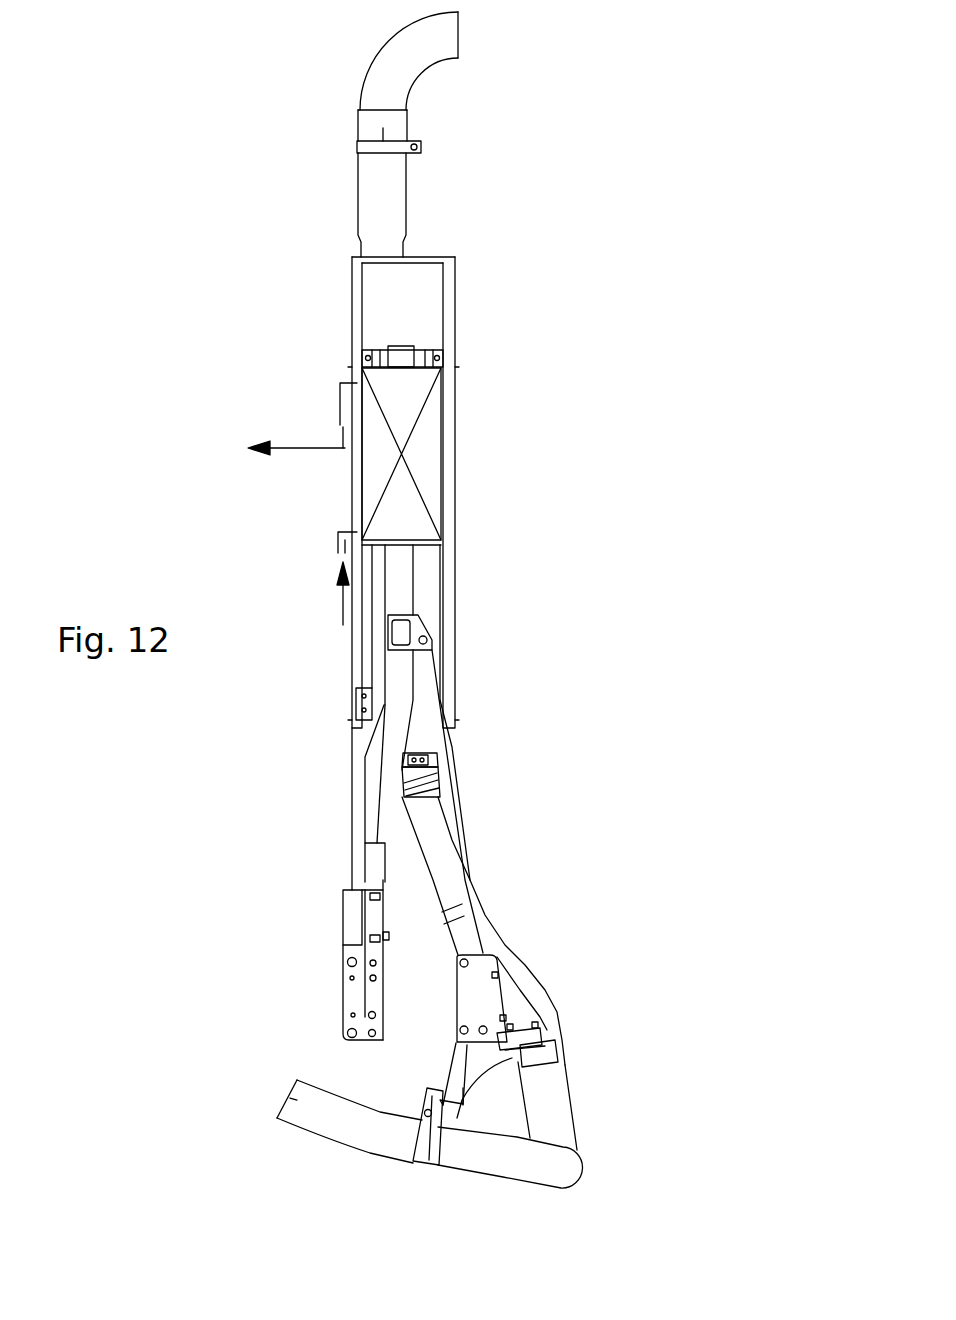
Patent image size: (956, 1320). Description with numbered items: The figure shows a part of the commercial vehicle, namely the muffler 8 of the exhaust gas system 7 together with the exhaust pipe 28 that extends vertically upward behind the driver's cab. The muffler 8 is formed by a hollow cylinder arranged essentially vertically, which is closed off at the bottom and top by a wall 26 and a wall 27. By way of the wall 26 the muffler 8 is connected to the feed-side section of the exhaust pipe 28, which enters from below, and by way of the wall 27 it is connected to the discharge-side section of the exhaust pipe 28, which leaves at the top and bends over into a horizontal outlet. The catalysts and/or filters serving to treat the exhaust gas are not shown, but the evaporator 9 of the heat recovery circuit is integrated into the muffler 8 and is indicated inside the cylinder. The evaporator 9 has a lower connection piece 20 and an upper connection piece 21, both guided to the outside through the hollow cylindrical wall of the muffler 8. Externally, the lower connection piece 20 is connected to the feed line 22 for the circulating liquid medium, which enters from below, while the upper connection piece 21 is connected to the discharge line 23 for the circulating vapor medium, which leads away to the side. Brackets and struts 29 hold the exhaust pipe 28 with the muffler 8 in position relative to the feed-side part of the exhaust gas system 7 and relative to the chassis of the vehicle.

The exhaust gas system 7 is at (325, 1125).
The muffler 8 is at (472, 590).
The evaporator 9 is at (434, 450).
The lower connection piece 20 is at (343, 530).
The upper connection piece 21 is at (343, 400).
The feed line 22 is at (343, 598).
The discharge line 23 is at (309, 447).
The wall 26 is at (413, 725).
The wall 27 is at (421, 255).
The exhaust pipe 28 is at (528, 944).
The brackets and struts 29 is at (463, 992).